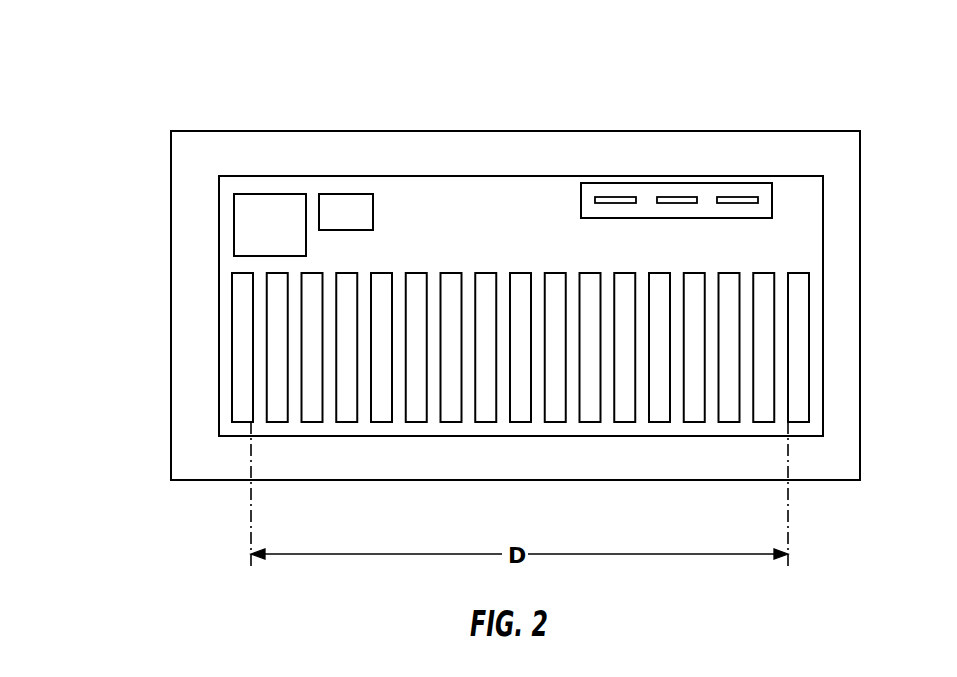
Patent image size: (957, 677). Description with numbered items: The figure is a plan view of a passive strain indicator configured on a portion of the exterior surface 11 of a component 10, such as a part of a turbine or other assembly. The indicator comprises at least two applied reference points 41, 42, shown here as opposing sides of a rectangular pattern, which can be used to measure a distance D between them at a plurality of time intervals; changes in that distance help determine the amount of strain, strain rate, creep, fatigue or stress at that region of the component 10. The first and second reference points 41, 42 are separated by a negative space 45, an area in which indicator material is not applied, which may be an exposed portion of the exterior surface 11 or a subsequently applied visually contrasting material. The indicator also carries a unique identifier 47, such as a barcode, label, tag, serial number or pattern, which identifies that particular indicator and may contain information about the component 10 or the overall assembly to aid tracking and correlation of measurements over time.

The component 10 is at (127, 141).
The exterior surface 11 is at (519, 158).
The first reference point 41 is at (233, 422).
The second reference point 42 is at (808, 422).
The negative space 45 is at (262, 314).
The unique identifier 47 is at (702, 182).